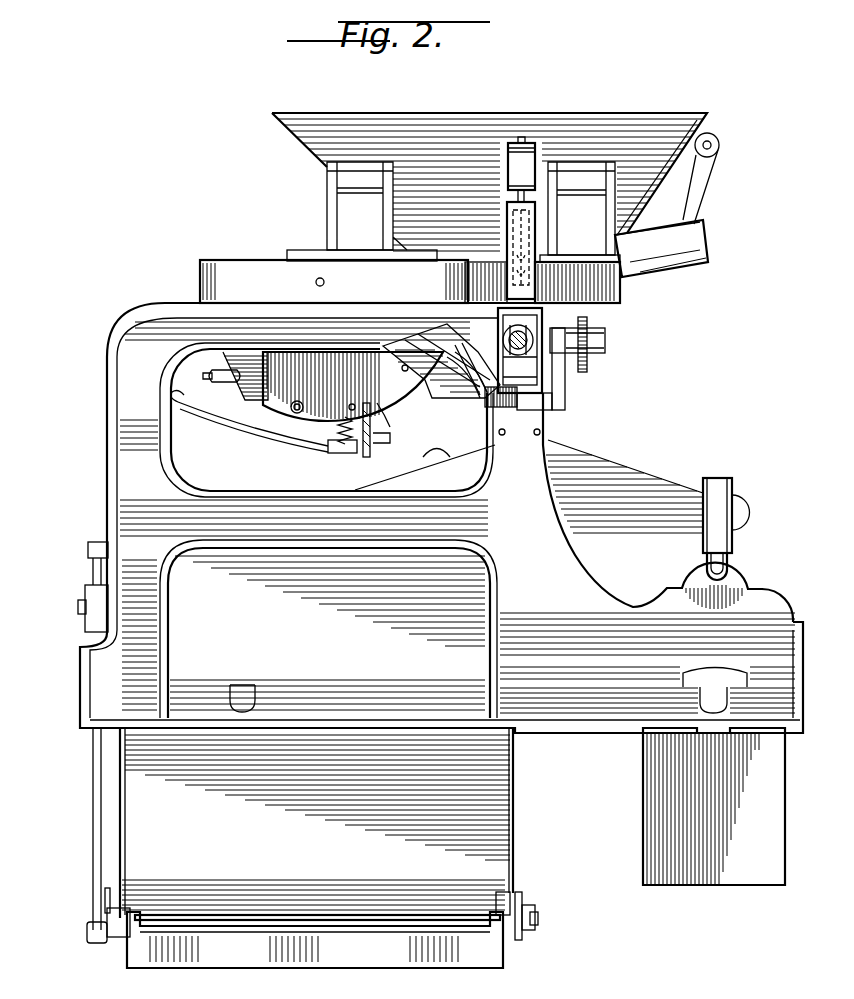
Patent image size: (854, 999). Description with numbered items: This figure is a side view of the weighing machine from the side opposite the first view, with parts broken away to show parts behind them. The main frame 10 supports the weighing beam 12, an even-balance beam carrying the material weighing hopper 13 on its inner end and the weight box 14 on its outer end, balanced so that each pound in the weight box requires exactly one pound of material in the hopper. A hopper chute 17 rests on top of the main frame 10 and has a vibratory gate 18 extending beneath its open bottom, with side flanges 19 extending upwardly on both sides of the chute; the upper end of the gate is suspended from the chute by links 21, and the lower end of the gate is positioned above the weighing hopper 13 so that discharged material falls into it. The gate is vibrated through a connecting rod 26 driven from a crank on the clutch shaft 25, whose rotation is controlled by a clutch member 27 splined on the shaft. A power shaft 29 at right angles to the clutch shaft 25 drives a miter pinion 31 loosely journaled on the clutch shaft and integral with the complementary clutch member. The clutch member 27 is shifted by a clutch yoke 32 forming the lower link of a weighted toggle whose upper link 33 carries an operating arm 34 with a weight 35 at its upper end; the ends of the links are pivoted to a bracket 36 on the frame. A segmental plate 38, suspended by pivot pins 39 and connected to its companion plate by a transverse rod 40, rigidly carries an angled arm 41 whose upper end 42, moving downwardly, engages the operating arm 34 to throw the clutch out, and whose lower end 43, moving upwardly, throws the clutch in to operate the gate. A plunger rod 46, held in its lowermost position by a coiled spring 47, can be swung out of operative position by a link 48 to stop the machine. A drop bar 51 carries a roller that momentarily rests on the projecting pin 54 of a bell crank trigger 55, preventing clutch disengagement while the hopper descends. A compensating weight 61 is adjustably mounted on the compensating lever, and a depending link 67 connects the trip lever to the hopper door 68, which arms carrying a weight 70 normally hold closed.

The main frame 10 is at (584, 729).
The weighing beam 12 is at (593, 479).
The material weighing hopper 13 is at (510, 848).
The weight box 14 is at (648, 843).
The hopper chute 17 is at (443, 123).
The vibratory gate 18 is at (660, 268).
The side flanges 19 is at (640, 241).
The links 21 is at (704, 197).
The clutch shaft 25 is at (548, 363).
The connecting rod 26 is at (458, 349).
The clutch member 27 is at (524, 338).
The power shaft 29 is at (606, 342).
The miter pinion 31 is at (590, 353).
The clutch yoke 32 is at (548, 303).
The upper link 33 is at (533, 138).
The operating arm 34 is at (533, 232).
The weight 35 is at (504, 150).
The bracket 36 is at (540, 248).
The segmental plate 38 is at (262, 407).
The pivot pins 39 is at (326, 282).
The transverse rod 40 is at (304, 406).
The angled arm 41 is at (432, 382).
The upper end 42 is at (388, 352).
The lower end 43 is at (463, 401).
The plunger rod 46 is at (337, 430).
The coiled spring 47 is at (348, 412).
The link 48 is at (228, 419).
The drop bar 51 is at (374, 426).
The projecting pin 54 is at (403, 371).
The bell crank trigger 55 is at (382, 430).
The compensating weight 61 is at (437, 453).
The depending link 67 is at (94, 767).
The hopper door 68 is at (378, 921).
The weight 70 is at (222, 952).